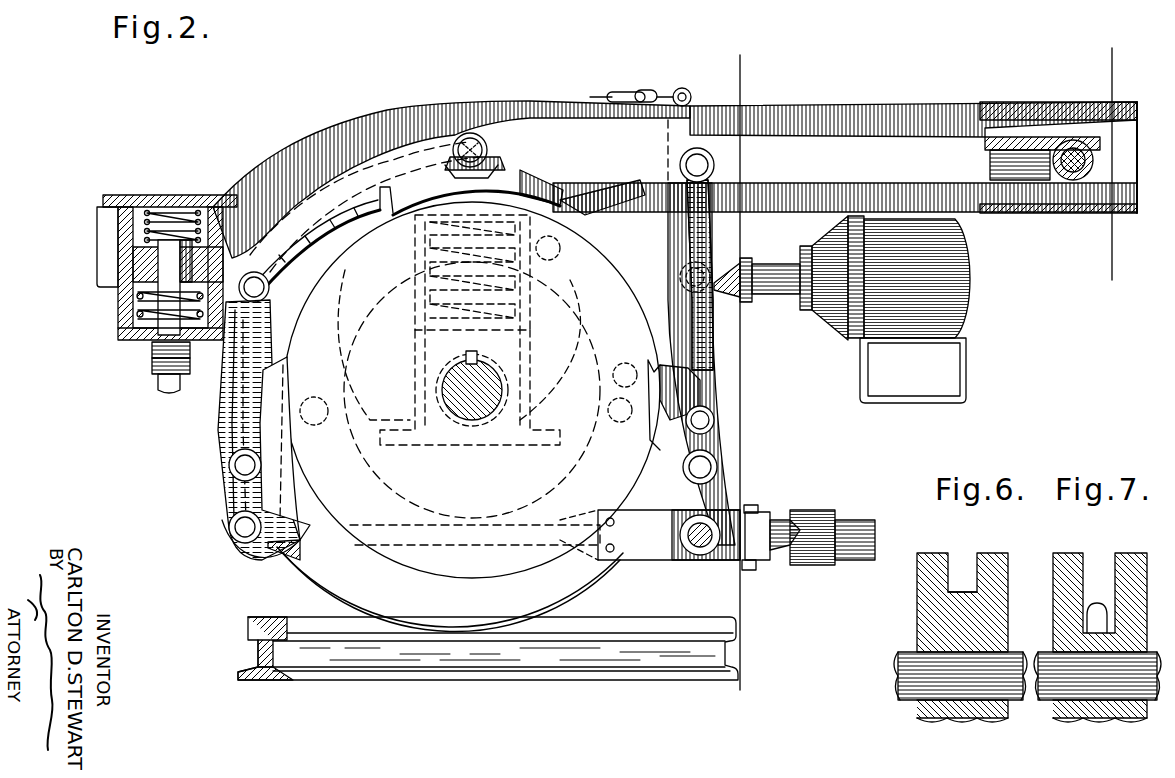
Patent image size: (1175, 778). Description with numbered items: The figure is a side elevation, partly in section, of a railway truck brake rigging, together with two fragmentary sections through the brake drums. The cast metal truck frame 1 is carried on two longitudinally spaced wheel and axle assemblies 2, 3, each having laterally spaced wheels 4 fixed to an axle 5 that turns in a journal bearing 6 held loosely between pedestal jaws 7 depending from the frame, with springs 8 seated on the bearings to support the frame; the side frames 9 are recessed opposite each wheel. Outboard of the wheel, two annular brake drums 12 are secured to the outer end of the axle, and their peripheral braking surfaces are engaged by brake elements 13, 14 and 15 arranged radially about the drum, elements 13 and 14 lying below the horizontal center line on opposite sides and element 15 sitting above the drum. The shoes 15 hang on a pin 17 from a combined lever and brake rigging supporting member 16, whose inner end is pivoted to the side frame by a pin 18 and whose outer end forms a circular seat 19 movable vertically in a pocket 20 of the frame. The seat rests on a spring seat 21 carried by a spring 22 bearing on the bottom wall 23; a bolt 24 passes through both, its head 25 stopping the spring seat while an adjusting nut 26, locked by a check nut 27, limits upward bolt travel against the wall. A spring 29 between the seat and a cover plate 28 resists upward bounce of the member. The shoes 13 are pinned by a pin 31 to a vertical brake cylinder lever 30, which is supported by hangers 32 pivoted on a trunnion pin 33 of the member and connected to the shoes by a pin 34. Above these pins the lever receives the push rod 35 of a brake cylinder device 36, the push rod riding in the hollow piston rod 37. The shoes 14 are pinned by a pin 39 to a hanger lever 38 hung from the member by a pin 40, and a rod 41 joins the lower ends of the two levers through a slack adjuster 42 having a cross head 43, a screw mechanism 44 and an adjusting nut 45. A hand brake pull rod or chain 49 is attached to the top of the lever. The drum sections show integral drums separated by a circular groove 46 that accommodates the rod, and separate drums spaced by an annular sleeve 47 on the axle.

In FIG. 2, the truck frame 1 is at (318, 135).
In FIG. 2, the wheel and axle assembly 2 is at (350, 575).
In FIG. 6, the wheel and axle assembly 2 is at (920, 678).
In FIG. 7, the wheel and axle assembly 2 is at (1137, 688).
In FIG. 2, the wheel and axle assembly 3 is at (728, 695).
In FIG. 2, the wheel 4 is at (625, 565).
In FIG. 2, the axle 5 is at (480, 408).
In FIG. 2, the journal bearing 6 is at (520, 345).
In FIG. 2, the pedestal jaw 7 is at (520, 395).
In FIG. 2, the spring 8 is at (500, 245).
In FIG. 2, the side frame 9 is at (790, 115).
In FIG. 2, the brake drum 12 is at (470, 552).
In FIG. 6, the brake drum 12 is at (1000, 540).
In FIG. 7, the brake drum 12 is at (1130, 595).
In FIG. 2, the brake element 13 is at (702, 395).
In FIG. 2, the brake element 14 is at (290, 478).
In FIG. 2, the brake element 15 is at (388, 212).
In FIG. 2, the combined lever and brake rigging supporting member 16 is at (490, 120).
In FIG. 2, the pin 17 is at (465, 140).
In FIG. 2, the pin 18 is at (1074, 170).
In FIG. 2, the circular seat 19 is at (160, 265).
In FIG. 2, the pocket 20 is at (120, 205).
In FIG. 2, the spring seat 21 is at (128, 290).
In FIG. 2, the spring 22 is at (136, 316).
In FIG. 2, the bottom wall 23 is at (125, 340).
In FIG. 2, the bolt 24 is at (168, 393).
In FIG. 2, the head 25 is at (160, 228).
In FIG. 2, the adjusting nut 26 is at (158, 350).
In FIG. 2, the check nut 27 is at (160, 370).
In FIG. 2, the cover plate 28 is at (178, 195).
In FIG. 2, the spring 29 is at (110, 215).
In FIG. 2, the brake cylinder lever 30 is at (680, 348).
In FIG. 2, the pin 31 is at (706, 468).
In FIG. 2, the hanger 32 is at (702, 232).
In FIG. 2, the pin 33 is at (704, 165).
In FIG. 2, the pin 34 is at (708, 422).
In FIG. 2, the push rod 35 is at (738, 292).
In FIG. 2, the brake cylinder device 36 is at (832, 320).
In FIG. 2, the hollow piston rod 37 is at (782, 282).
In FIG. 2, the hanger lever 38 is at (235, 522).
In FIG. 2, the pin 39 is at (230, 465).
In FIG. 2, the pin 40 is at (264, 292).
In FIG. 2, the rod 41 is at (272, 560).
In FIG. 2, the slack adjuster 42 is at (812, 512).
In FIG. 2, the cross head 43 is at (713, 562).
In FIG. 2, the screw mechanism 44 is at (750, 570).
In FIG. 2, the adjusting nut 45 is at (855, 525).
In FIG. 6, the circular groove 46 is at (962, 578).
In FIG. 7, the annular sleeve 47 is at (1088, 615).
In FIG. 2, the hand brake pull rod or chain 49 is at (590, 95).